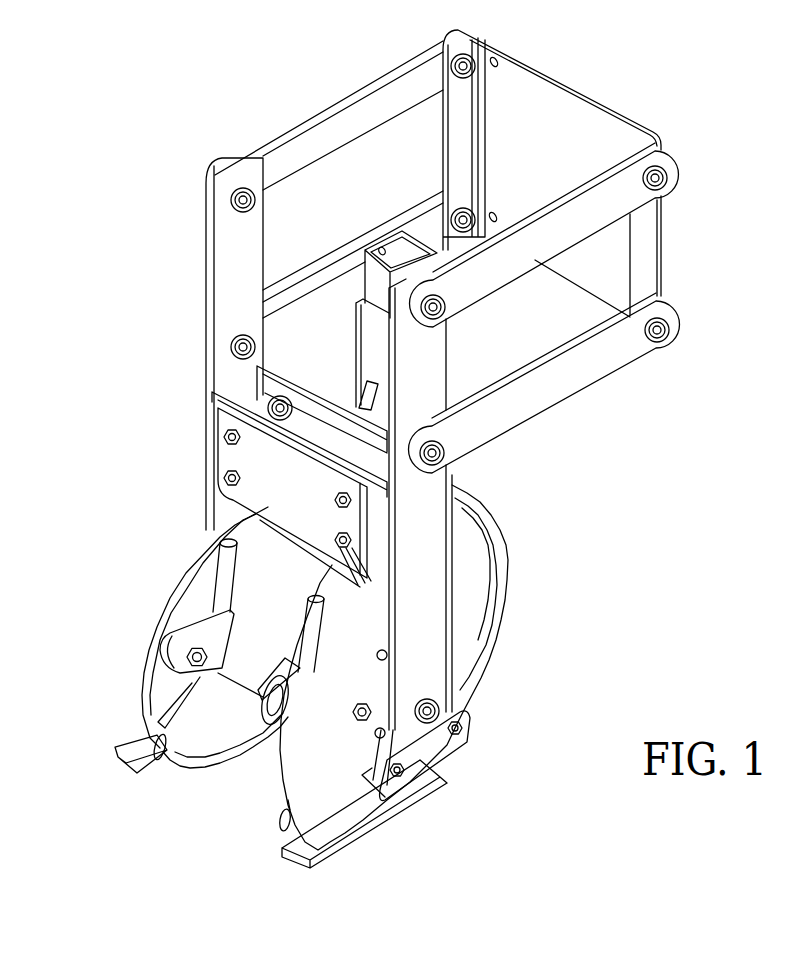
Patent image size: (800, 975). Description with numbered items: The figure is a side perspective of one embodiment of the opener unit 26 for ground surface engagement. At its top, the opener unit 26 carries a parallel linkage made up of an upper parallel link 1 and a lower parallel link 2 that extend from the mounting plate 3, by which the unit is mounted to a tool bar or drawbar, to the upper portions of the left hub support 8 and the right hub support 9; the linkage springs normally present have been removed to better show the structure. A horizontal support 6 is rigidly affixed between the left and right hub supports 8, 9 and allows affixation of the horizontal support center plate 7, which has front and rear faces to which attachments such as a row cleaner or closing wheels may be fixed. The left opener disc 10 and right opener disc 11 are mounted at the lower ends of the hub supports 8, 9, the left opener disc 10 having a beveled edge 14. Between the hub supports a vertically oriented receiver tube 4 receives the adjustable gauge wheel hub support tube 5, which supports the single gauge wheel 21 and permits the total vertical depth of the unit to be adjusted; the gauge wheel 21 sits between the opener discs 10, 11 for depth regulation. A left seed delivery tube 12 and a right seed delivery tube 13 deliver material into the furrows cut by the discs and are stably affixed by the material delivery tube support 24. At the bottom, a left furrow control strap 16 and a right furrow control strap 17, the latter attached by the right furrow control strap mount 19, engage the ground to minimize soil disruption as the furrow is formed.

The upper parallel link 1 is at (358, 88).
The lower parallel link 2 is at (590, 387).
The mounting plate 3 is at (578, 86).
The receiver tube 4 is at (375, 338).
The adjustable gauge wheel hub support tube 5 is at (378, 248).
The horizontal support 6 is at (220, 404).
The horizontal support center plate 7 is at (243, 497).
The left hub support 8 is at (228, 268).
The right hub support 9 is at (425, 594).
The left opener disc 10 is at (175, 614).
The right opener disc 11 is at (315, 768).
The left opener disc seed delivery tube 12 is at (160, 724).
The right opener disc seed delivery tube 13 is at (283, 826).
The left opener disc beveled edge 14 is at (153, 654).
The left furrow control strap 16 is at (117, 746).
The right furrow control strap 17 is at (312, 843).
The right furrow control strap mount 19 is at (420, 757).
The gauge wheel 21 is at (497, 528).
The material delivery tube support 24 is at (267, 391).
The opener unit 26 is at (140, 203).